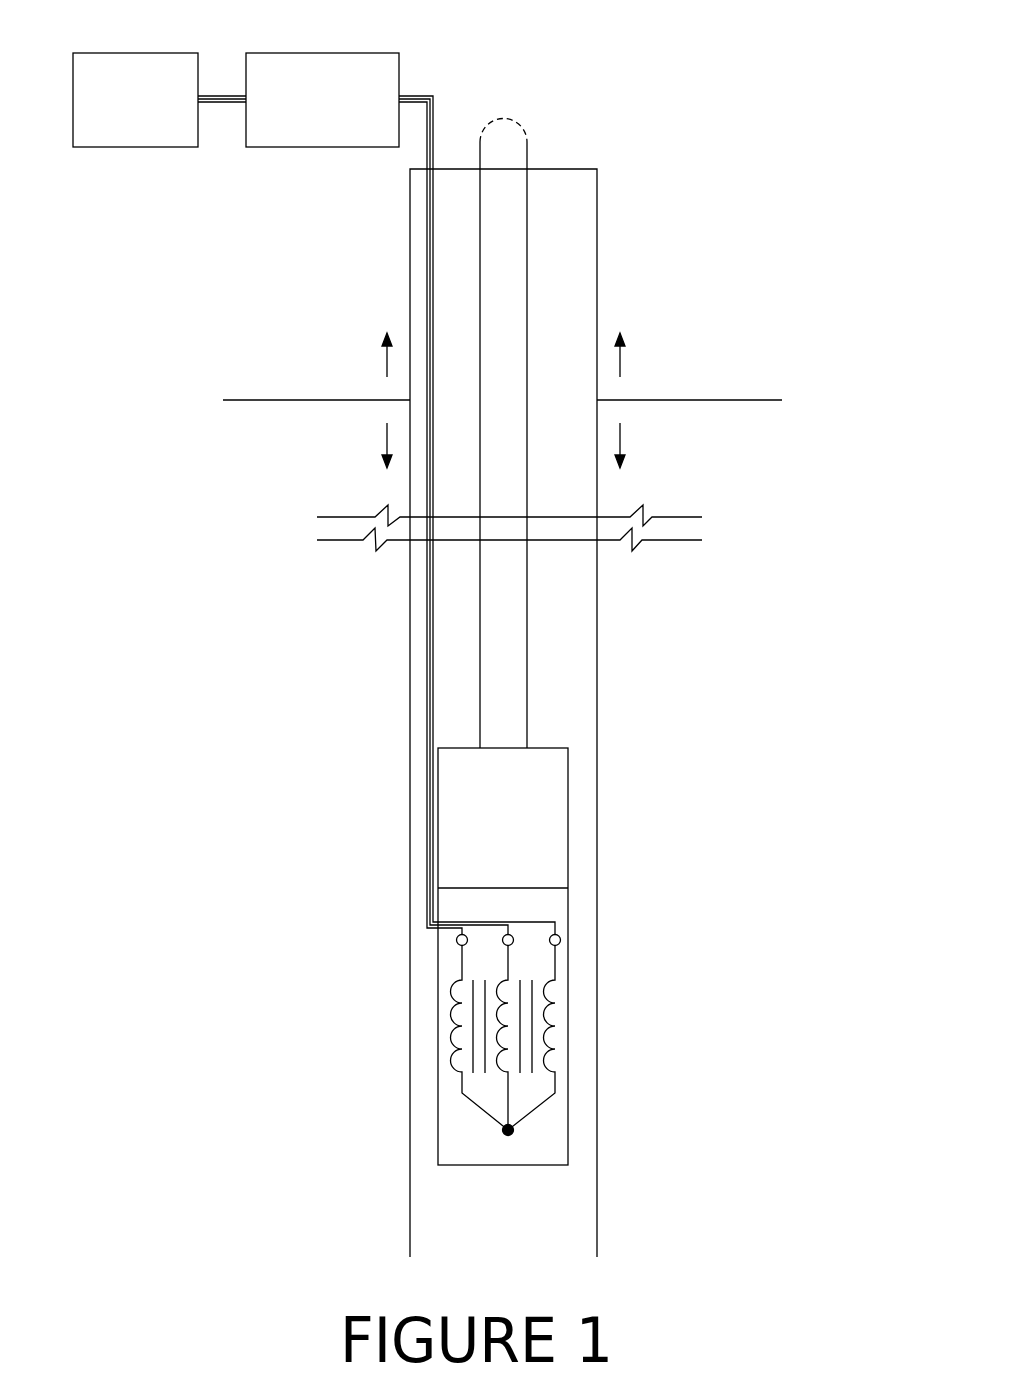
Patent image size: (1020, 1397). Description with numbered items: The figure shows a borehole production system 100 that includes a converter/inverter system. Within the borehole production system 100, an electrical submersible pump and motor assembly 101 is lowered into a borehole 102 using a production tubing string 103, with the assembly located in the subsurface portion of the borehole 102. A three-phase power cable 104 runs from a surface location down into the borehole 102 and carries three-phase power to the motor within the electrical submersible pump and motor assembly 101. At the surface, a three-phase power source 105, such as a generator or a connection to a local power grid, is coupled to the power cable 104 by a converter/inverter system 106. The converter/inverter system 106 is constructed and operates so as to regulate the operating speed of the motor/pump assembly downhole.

The borehole production system 100 is at (260, 497).
The electrical submersible pump and motor assembly 101 is at (397, 748).
The borehole 102 is at (592, 169).
The production tubing string 103 is at (527, 142).
The three-phase power cable 104 is at (416, 92).
The three-phase power source 105 is at (147, 53).
The converter/inverter system 106 is at (320, 53).